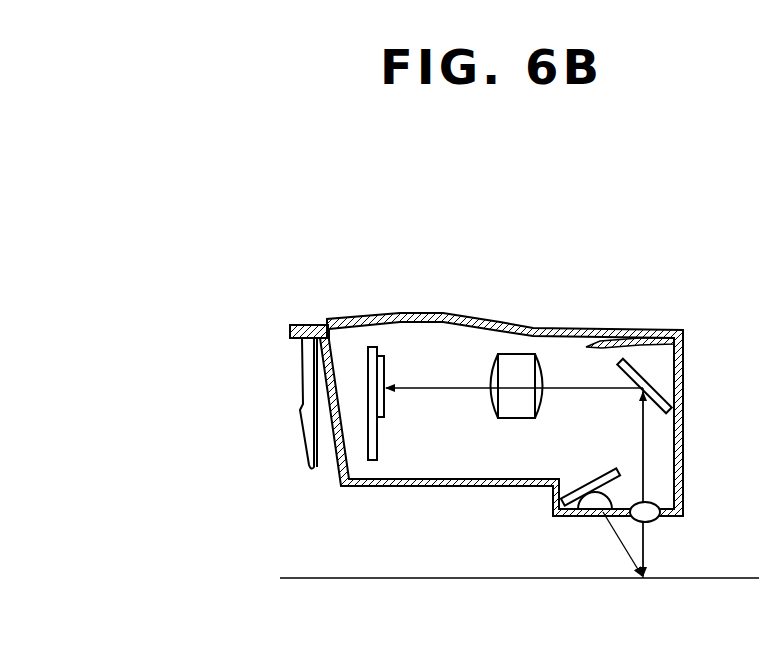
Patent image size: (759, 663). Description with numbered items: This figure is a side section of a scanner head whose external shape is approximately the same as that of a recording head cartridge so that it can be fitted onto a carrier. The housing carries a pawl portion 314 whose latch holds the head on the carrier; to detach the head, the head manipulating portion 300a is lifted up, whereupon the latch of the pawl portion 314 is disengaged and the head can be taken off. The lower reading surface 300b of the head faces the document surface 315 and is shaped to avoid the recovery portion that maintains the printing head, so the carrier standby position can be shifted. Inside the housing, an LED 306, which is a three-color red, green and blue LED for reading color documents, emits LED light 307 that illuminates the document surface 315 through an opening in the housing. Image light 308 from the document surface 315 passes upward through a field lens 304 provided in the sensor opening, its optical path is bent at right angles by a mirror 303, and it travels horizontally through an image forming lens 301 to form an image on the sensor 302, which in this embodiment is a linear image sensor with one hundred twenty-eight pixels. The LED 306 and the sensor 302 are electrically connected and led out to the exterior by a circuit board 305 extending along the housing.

The head manipulating portion 300a is at (290, 330).
The reading surface 300b is at (556, 516).
The image forming lens 301 is at (520, 354).
The sensor 302 is at (388, 345).
The mirror 303 is at (660, 390).
The field lens 304 is at (653, 520).
The circuit board 305 is at (568, 332).
The LED 306 is at (596, 474).
The LED light 307 is at (618, 518).
The image light 308 is at (432, 386).
The pawl portion 314 is at (305, 422).
The document surface 315 is at (312, 577).